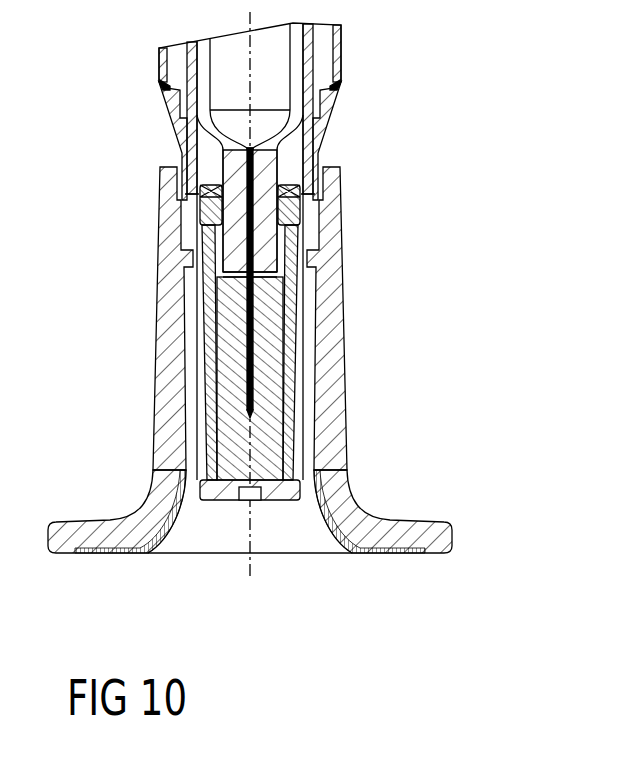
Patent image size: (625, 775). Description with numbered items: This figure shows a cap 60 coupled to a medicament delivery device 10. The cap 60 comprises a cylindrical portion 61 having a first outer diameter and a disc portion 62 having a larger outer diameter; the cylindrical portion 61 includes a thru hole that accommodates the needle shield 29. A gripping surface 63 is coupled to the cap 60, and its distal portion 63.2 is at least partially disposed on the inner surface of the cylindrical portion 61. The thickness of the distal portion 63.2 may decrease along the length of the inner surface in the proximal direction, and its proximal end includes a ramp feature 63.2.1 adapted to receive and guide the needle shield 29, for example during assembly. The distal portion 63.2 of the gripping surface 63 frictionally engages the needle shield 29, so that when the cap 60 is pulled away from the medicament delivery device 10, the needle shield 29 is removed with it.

The medicament delivery device 10 is at (358, 50).
The needle shield 29 is at (303, 333).
The cap 60 is at (128, 208).
The cylindrical portion 61 is at (332, 227).
The disc portion 62 is at (442, 537).
The gripping surface 63 is at (264, 342).
The distal portion 63.2 is at (302, 398).
The ramp feature 63.2.1 is at (187, 303).